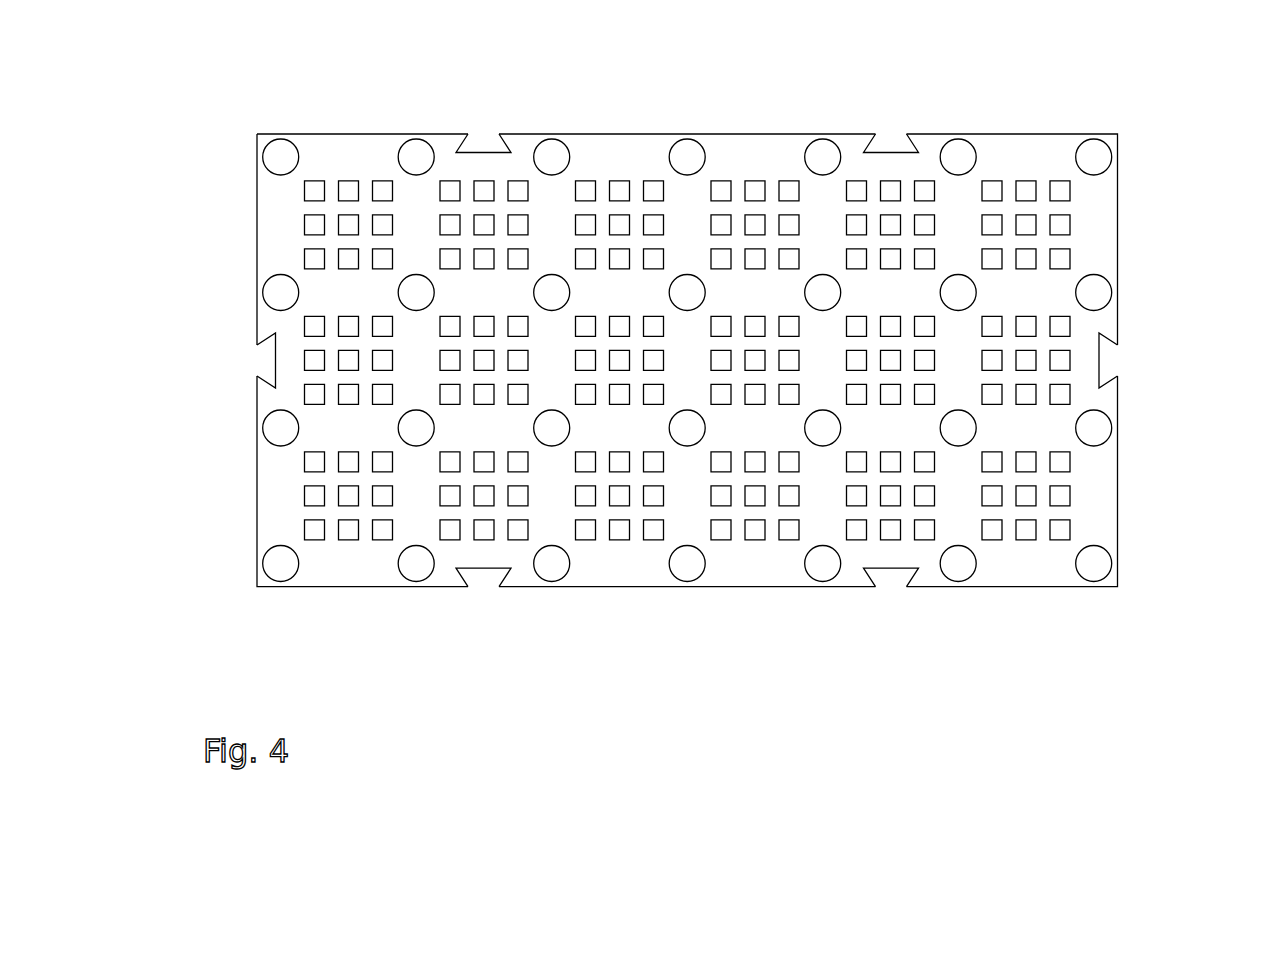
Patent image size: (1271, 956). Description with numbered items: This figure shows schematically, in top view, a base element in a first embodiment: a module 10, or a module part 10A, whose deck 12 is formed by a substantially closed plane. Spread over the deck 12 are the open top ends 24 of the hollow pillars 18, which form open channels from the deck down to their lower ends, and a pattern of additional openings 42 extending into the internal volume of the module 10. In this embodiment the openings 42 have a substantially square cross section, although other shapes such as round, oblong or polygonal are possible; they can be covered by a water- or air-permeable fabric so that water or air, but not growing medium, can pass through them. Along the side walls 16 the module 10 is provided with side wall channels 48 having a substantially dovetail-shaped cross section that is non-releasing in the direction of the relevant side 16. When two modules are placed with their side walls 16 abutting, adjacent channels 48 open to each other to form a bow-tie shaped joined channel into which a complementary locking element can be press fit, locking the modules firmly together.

The module 10 is at (1155, 306).
The module part 10A is at (1026, 157).
The deck 12 is at (281, 496).
The side wall 16 is at (350, 134).
The pillar 18 is at (712, 117).
The open top end 24 is at (552, 157).
The opening 42 is at (1060, 225).
The side wall channel 48 is at (484, 145).